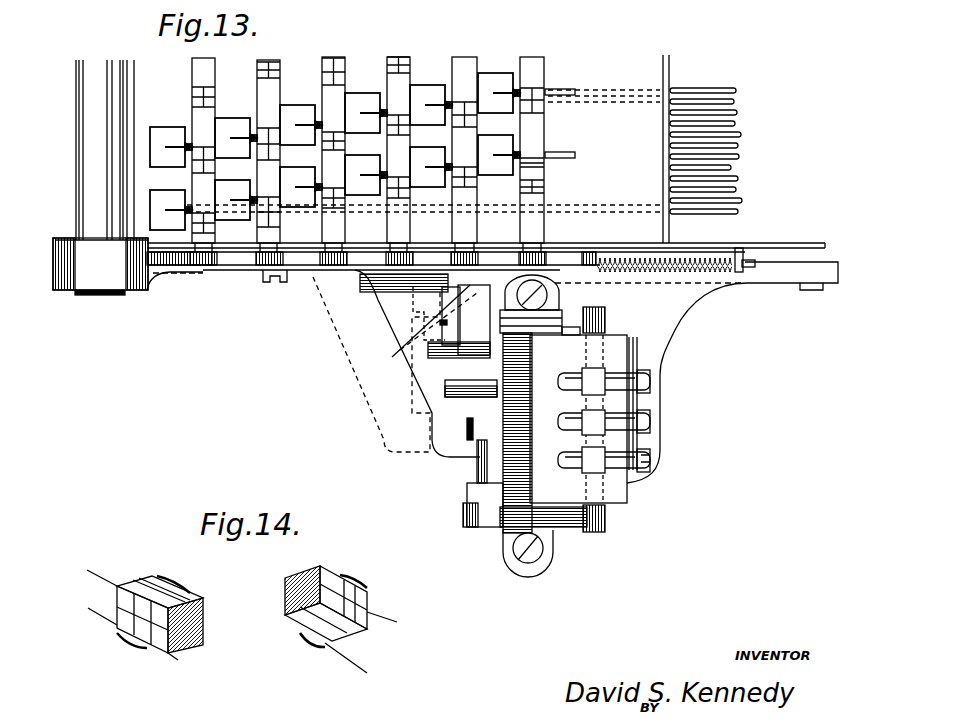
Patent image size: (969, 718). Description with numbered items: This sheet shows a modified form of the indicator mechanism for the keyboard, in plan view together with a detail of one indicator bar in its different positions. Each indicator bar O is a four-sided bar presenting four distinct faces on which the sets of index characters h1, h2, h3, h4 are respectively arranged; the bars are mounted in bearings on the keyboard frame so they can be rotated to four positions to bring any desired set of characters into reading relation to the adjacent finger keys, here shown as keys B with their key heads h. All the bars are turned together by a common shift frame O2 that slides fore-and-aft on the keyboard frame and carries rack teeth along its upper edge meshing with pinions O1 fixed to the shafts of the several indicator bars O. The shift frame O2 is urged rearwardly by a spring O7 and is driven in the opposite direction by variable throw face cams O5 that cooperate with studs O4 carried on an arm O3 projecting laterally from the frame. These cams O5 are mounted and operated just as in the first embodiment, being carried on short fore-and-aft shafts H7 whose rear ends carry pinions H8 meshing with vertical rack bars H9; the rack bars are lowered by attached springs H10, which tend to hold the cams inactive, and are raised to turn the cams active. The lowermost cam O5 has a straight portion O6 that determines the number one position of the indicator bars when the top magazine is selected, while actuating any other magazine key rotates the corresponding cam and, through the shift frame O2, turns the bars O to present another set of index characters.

In FIG. 13, the indicator bar O is at (213, 76).
In FIG. 14, the indicator bar O is at (133, 582).
In FIG. 13, the key B is at (163, 127).
In FIG. 13, the key head h is at (281, 80).
In FIG. 13, the pinion O1 is at (258, 255).
In FIG. 13, the shift frame O2 is at (306, 277).
In FIG. 13, the arm O3 is at (392, 310).
In FIG. 13, the stud O4 is at (475, 441).
In FIG. 13, the variable throw face cam O5 is at (453, 521).
In FIG. 13, the straight portion O6 is at (480, 463).
In FIG. 13, the spring O7 is at (686, 261).
In FIG. 13, the fore-and-aft shaft H7 is at (495, 367).
In FIG. 13, the pinion H8 is at (605, 323).
In FIG. 13, the vertical rack bar H9 is at (592, 417).
In FIG. 13, the spring H10 is at (648, 453).
In FIG. 14, the set of index characters h1 is at (176, 576).
In FIG. 14, the set of index characters h2 is at (125, 652).
In FIG. 14, the set of index characters h3 is at (309, 652).
In FIG. 14, the set of index characters h4 is at (356, 574).